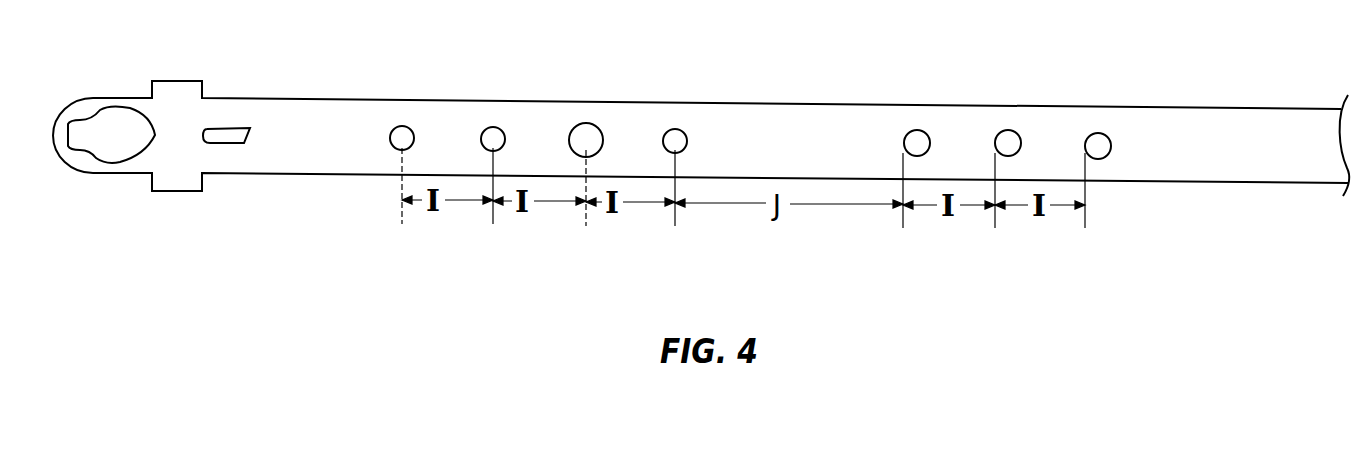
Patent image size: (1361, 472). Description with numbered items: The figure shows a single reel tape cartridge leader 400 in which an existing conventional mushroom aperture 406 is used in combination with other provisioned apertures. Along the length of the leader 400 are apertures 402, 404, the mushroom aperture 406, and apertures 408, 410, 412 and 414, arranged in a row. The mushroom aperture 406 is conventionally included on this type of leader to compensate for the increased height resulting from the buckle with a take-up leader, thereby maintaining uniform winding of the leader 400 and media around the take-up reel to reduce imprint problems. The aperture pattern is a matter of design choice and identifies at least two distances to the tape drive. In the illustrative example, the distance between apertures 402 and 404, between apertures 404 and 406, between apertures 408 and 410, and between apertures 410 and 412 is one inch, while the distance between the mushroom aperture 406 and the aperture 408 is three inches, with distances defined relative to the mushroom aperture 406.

The single reel tape cartridge leader 400 is at (275, 98).
The aperture 402 is at (404, 126).
The aperture 404 is at (493, 127).
The mushroom aperture 406 is at (586, 123).
The aperture 408 is at (675, 129).
The aperture 410 is at (917, 130).
The aperture 412 is at (1008, 130).
The hole 414 is at (1098, 133).